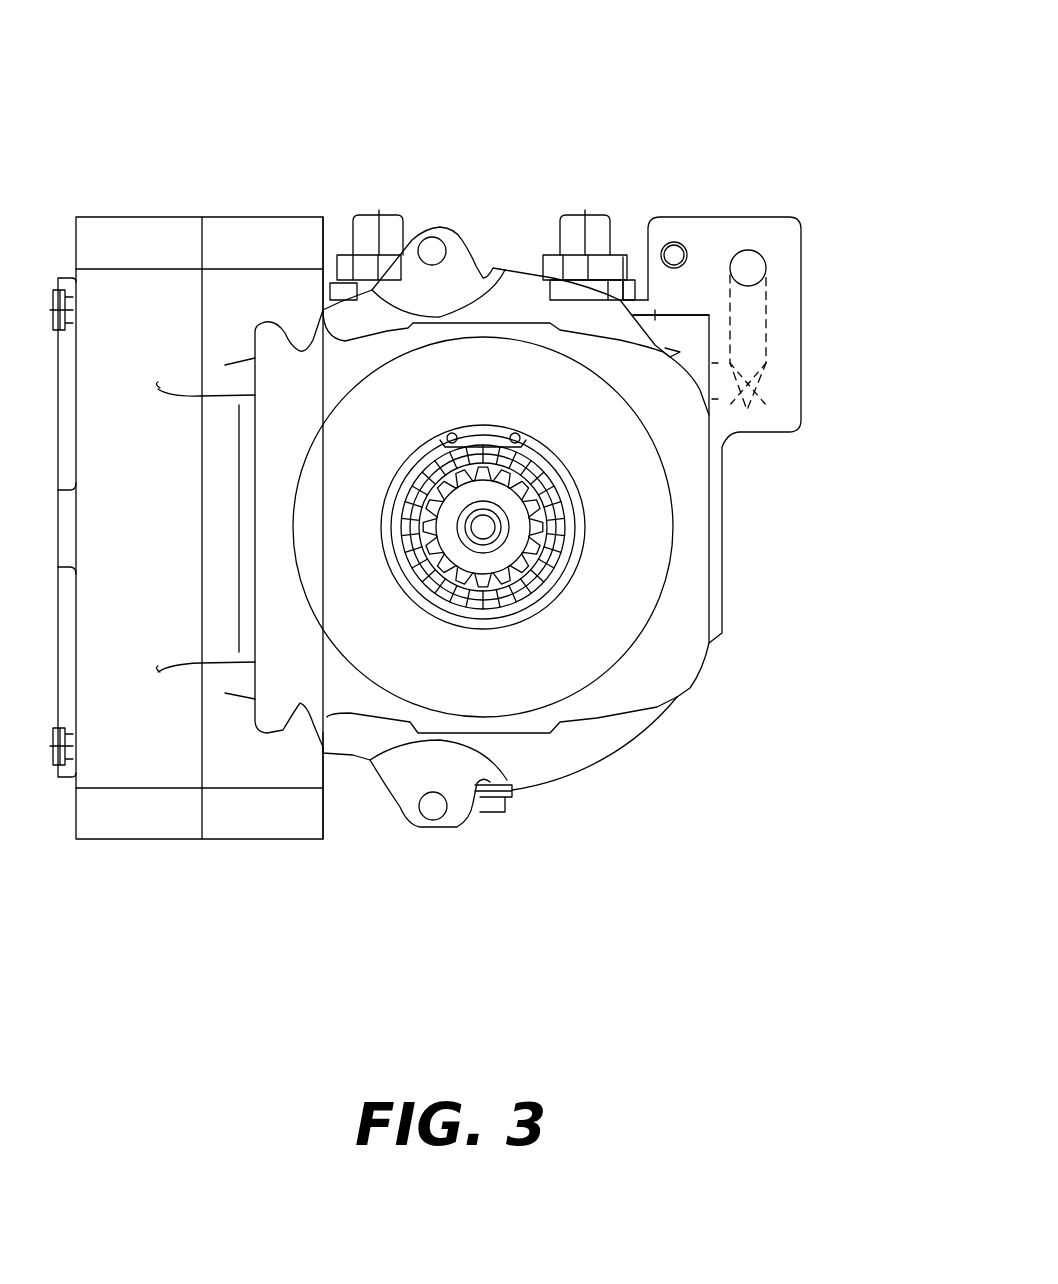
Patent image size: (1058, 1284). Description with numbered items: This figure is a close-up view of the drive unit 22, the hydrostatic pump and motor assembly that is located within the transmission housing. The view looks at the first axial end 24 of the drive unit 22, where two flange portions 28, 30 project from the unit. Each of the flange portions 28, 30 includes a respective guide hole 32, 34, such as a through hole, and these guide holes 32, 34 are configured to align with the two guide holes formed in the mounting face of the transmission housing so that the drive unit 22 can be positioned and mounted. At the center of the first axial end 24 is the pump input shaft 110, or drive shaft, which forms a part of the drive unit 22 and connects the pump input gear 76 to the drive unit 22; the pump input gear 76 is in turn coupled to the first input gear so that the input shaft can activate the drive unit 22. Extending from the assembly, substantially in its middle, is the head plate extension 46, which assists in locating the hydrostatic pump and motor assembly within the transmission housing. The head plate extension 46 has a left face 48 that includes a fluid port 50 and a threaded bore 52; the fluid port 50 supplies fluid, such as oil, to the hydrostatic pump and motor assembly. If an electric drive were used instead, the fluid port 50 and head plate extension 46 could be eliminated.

The drive unit 22 is at (657, 90).
The first axial end 24 is at (662, 704).
The flange portion 28 is at (455, 223).
The flange portion 30 is at (415, 823).
The guide hole 32 is at (430, 228).
The guide hole 34 is at (447, 813).
The head plate extension 46 is at (802, 315).
The left face 48 is at (711, 307).
The fluid port 50 is at (763, 251).
The threaded bore 52 is at (676, 243).
The pump input gear 76 is at (623, 627).
The pump input shaft 110 is at (485, 527).